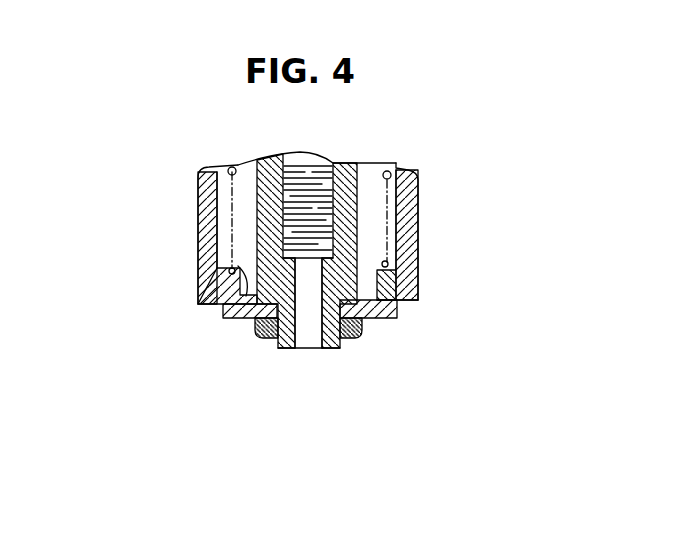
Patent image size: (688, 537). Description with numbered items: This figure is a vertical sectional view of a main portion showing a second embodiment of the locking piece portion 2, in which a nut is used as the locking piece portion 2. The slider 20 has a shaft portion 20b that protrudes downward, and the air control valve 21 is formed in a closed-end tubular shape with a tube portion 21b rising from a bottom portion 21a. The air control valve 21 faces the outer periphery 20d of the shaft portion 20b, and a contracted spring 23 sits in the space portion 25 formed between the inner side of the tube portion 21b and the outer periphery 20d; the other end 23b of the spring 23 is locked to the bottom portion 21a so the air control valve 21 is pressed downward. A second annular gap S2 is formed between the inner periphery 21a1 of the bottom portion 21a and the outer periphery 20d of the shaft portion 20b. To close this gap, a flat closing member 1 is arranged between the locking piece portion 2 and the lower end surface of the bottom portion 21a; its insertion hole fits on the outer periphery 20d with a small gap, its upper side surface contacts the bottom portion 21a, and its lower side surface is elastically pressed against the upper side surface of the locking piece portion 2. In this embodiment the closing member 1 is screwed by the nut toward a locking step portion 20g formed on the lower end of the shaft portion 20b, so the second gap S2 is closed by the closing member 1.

The closing member 1 is at (398, 313).
The locking piece portion 2 is at (358, 340).
The slider 20 is at (414, 250).
The shaft portion 20b is at (414, 250).
The outer periphery of the shaft portion 20d is at (542, 182).
The locking step portion 20g is at (252, 316).
The air control valve 21 is at (235, 223).
The tube portion 21b is at (198, 193).
The bottom portion 21a is at (141, 305).
The inner periphery of the bottom portion 21a1 is at (212, 290).
The spring 23 is at (431, 285).
The other end of the spring 23b is at (431, 300).
The space portion 25 is at (383, 205).
The second annular gap S2 is at (222, 263).